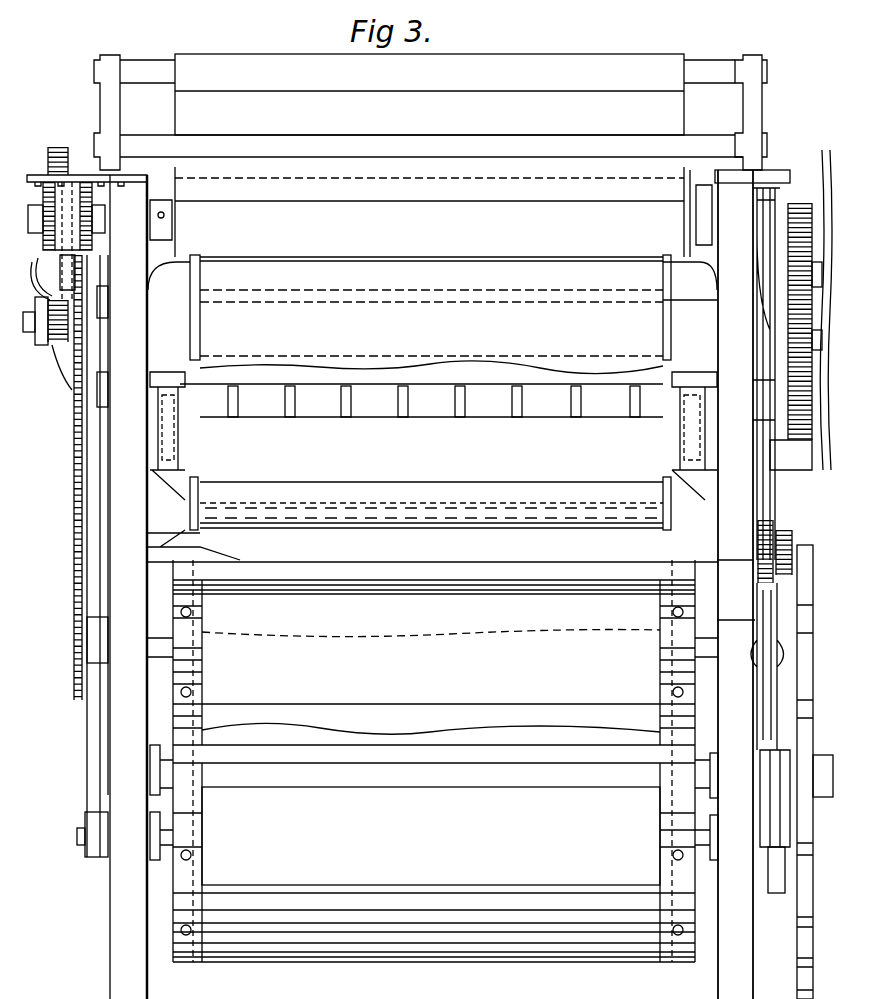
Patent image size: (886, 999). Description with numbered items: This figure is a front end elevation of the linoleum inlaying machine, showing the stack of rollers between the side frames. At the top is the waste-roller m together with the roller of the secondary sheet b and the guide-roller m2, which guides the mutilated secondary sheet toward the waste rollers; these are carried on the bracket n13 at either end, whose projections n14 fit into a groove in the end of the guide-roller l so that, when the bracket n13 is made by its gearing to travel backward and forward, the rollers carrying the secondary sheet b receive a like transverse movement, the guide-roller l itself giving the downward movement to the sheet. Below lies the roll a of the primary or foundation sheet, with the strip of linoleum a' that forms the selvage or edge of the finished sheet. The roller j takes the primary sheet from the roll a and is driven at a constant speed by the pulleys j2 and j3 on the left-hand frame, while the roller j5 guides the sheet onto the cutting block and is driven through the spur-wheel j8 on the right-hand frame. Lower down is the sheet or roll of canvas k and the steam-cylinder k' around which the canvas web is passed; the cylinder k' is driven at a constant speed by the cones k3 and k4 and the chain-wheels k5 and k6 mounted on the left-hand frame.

The waste-roller m is at (427, 94).
The roller of secondary sheet b is at (429, 111).
The guide-roller m2 is at (431, 146).
The bracket n13 is at (98, 118).
The projections n14 is at (40, 165).
The guide-roller l is at (429, 210).
The roll of primary sheet a is at (458, 314).
The strip of linoleum a' is at (174, 307).
The chain-wheel k6 is at (85, 286).
The pulley j2 is at (149, 396).
The pulley j3 is at (150, 530).
The roller j is at (389, 494).
The spur-wheel j8 is at (750, 551).
The roller j5 is at (795, 568).
The cone k4 is at (110, 556).
The chain-wheel k5 is at (70, 690).
The sheet or roll of canvas k is at (434, 662).
The cone k3 is at (102, 838).
The steam-cylinder k' is at (434, 862).